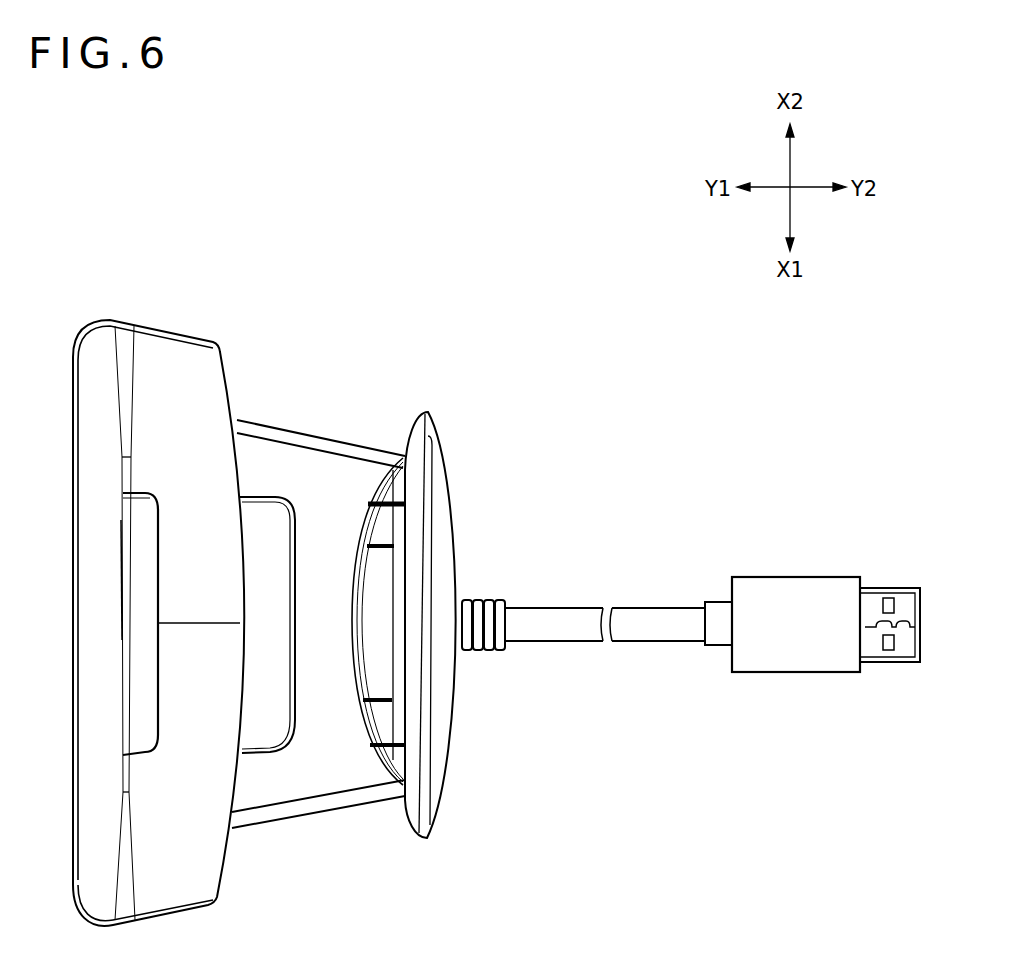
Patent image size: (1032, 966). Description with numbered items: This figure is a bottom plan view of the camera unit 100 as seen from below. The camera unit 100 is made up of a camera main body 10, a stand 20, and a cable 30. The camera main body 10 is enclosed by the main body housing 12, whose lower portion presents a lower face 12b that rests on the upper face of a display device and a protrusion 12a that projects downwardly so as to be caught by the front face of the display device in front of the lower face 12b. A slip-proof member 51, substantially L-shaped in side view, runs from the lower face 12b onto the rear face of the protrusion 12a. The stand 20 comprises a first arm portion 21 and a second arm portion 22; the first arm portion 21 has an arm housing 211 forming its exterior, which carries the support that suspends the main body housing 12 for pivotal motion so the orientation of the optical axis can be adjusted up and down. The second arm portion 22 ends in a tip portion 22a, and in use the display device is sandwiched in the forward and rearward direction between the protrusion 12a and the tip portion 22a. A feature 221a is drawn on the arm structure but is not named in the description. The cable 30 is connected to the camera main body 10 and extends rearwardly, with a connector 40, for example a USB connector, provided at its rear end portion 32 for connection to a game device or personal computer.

The camera unit 100 is at (350, 308).
The camera main body 10 is at (168, 330).
The main body housing 12 is at (75, 443).
The protrusion 12a is at (118, 588).
The lower face 12b is at (143, 343).
The slip-proof member 51 is at (140, 740).
The stand 20 is at (350, 442).
The first arm portion 21 is at (278, 830).
The arm housing 211 is at (255, 832).
The bracket portion 221a is at (262, 493).
The second arm portion 22 is at (448, 462).
The tip portion 22a is at (420, 808).
The cable 30 is at (660, 605).
The rear end portion 32 is at (782, 578).
The connector 40 is at (895, 588).